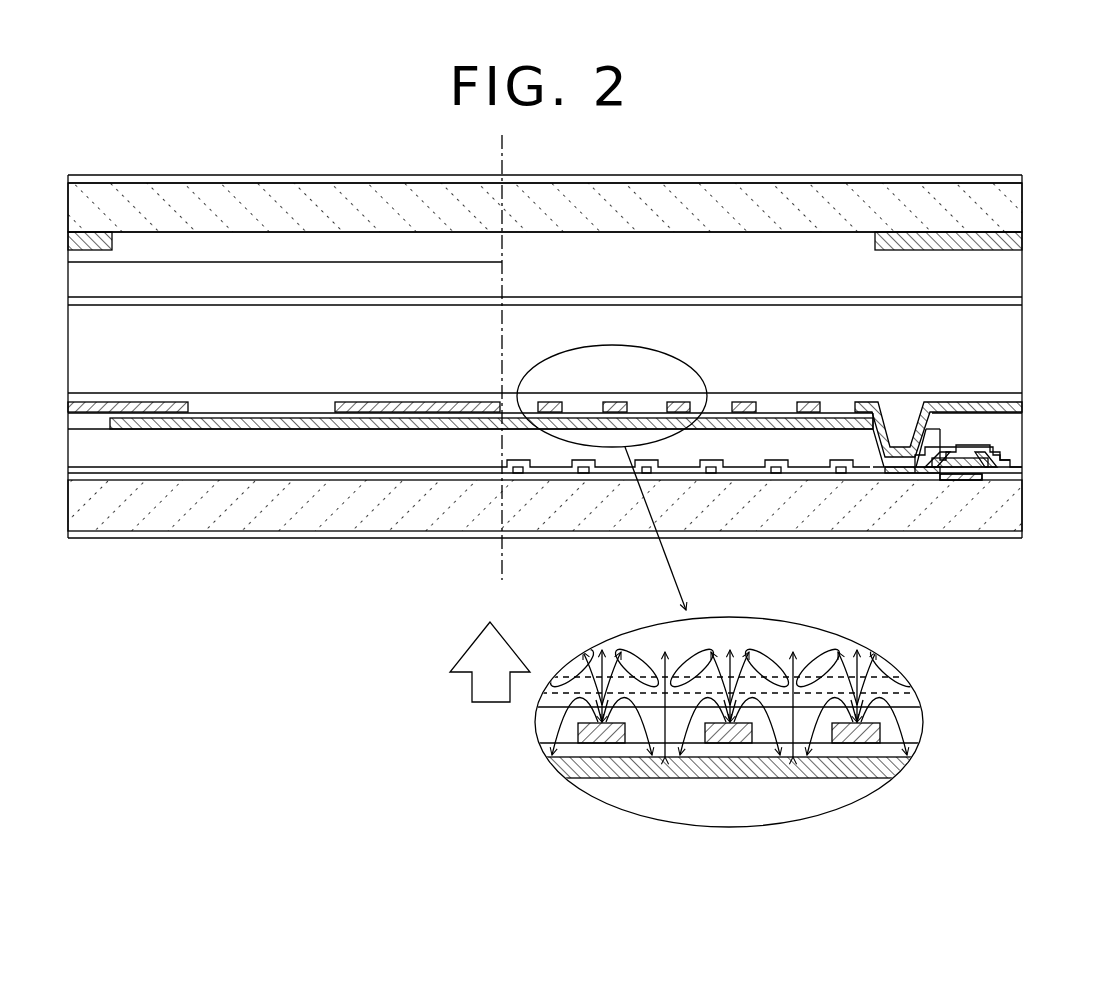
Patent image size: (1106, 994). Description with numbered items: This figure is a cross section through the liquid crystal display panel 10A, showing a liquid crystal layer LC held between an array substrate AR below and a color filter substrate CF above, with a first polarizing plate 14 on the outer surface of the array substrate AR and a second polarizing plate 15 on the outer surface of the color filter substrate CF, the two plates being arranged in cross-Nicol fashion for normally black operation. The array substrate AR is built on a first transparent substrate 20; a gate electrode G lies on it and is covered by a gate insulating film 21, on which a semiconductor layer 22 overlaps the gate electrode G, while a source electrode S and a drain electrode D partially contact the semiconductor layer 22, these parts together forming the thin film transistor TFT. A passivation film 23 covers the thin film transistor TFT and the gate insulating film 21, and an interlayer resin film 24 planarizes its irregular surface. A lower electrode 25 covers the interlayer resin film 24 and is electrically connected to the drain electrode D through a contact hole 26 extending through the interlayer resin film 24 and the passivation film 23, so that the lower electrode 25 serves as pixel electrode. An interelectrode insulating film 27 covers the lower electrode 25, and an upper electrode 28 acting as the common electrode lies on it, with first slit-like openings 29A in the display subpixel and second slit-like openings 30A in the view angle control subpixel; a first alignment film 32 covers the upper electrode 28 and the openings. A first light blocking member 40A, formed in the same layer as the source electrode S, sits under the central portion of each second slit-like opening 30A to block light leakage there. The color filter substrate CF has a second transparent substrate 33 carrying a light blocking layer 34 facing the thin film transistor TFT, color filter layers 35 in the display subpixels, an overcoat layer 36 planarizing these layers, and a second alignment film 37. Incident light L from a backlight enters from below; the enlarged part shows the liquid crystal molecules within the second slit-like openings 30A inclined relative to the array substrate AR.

The liquid crystal display panel 10A is at (85, 101).
The first polarizing plate 14 is at (418, 538).
The second polarizing plate 15 is at (882, 180).
The first transparent substrate 20 is at (372, 512).
The gate insulating film 21 is at (305, 478).
The semiconductor layer 22 is at (967, 482).
The passivation film 23 is at (258, 472).
The interlayer resin film 24 is at (190, 450).
The lower electrode 25 is at (220, 423).
The contact hole 26 is at (898, 450).
The interelectrode insulating film 27 is at (268, 417).
The upper electrode 28 is at (385, 402).
The first slit-like openings 29A is at (323, 405).
The second slit-like openings 30A is at (772, 407).
The first alignment film 32 is at (457, 396).
The second transparent substrate 33 is at (822, 205).
The light blocking layer 34 is at (98, 233).
The color filter layer 35 is at (360, 250).
The overcoat layer 36 is at (252, 282).
The second alignment film 37 is at (660, 300).
The first light blocking member 40A is at (583, 470).
The drain electrode D is at (946, 482).
The gate electrode G is at (958, 482).
The source electrode S is at (980, 482).
The thin film transistor TFT is at (877, 600).
The color filter substrate CF is at (1038, 183).
The array substrate AR is at (1038, 393).
The liquid crystal layer LC is at (997, 346).
The incident light L is at (490, 662).